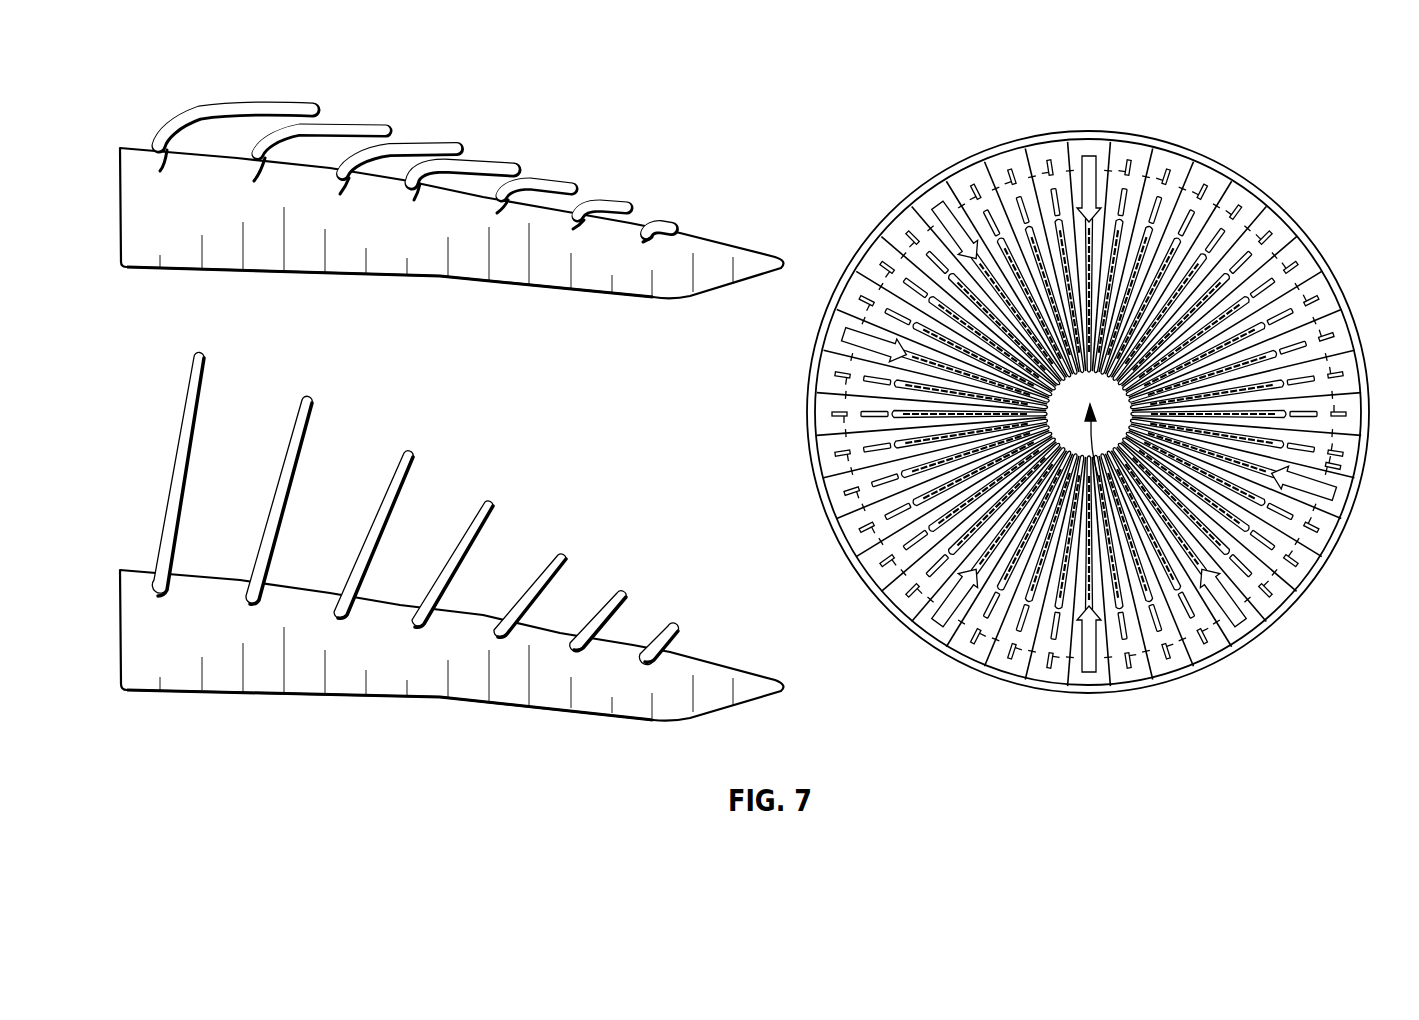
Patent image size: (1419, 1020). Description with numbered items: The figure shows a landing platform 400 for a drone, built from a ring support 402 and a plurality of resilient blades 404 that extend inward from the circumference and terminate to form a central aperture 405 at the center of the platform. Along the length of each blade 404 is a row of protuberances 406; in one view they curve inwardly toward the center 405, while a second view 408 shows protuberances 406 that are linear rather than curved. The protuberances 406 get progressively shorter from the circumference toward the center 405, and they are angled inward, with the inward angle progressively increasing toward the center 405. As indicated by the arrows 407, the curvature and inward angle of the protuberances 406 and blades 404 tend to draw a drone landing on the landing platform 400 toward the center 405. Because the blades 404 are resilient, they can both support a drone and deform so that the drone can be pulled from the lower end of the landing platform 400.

The landing platform 400 is at (1111, 402).
The ring support 402 is at (1298, 228).
The blades 404 is at (589, 155).
The center / central aperture 405 is at (1198, 577).
The protuberances 406 is at (348, 128).
The arrows 407 is at (1318, 478).
The view 408 is at (562, 492).